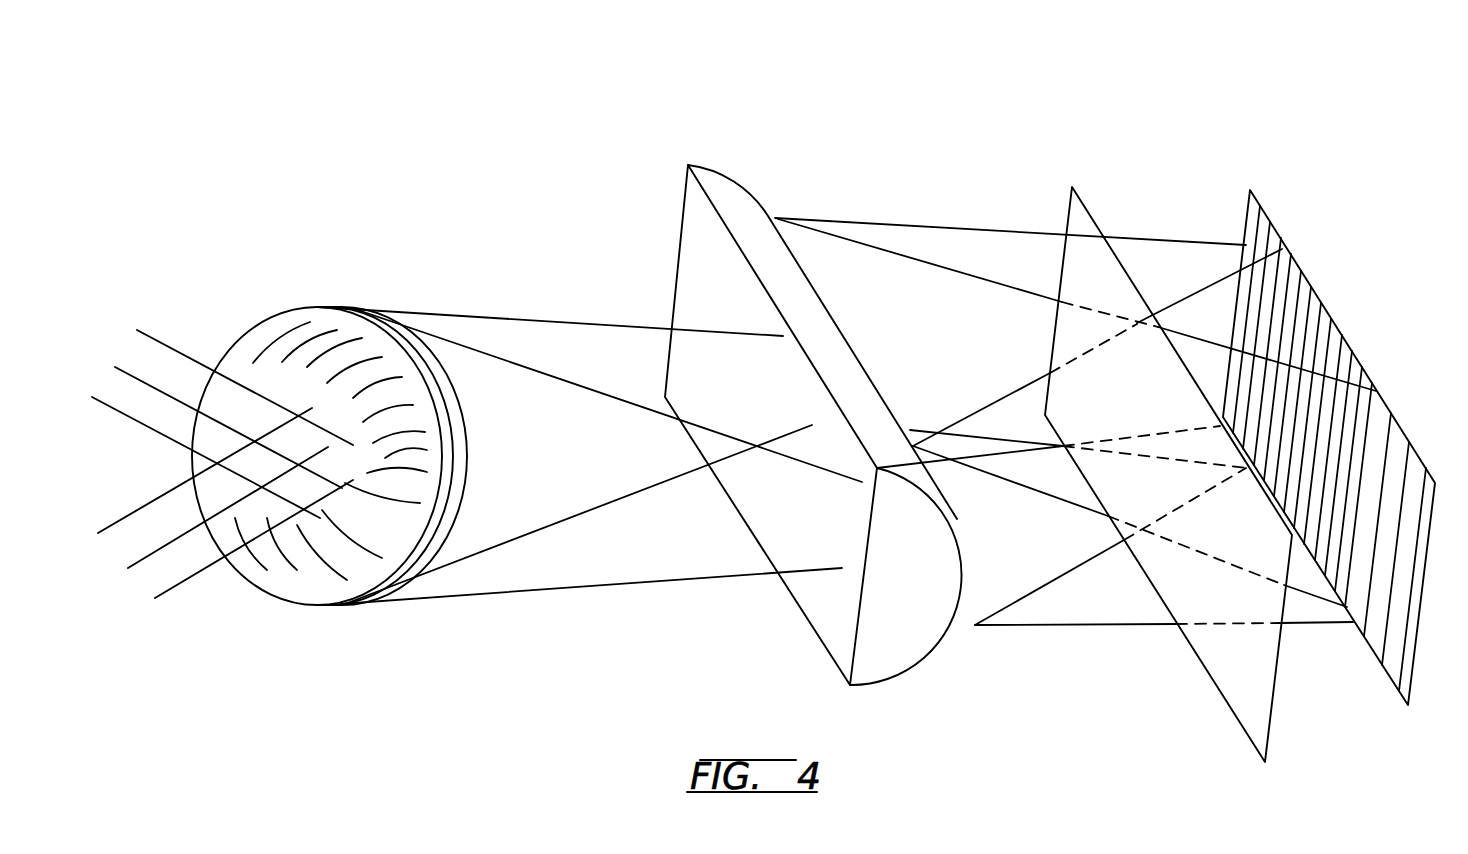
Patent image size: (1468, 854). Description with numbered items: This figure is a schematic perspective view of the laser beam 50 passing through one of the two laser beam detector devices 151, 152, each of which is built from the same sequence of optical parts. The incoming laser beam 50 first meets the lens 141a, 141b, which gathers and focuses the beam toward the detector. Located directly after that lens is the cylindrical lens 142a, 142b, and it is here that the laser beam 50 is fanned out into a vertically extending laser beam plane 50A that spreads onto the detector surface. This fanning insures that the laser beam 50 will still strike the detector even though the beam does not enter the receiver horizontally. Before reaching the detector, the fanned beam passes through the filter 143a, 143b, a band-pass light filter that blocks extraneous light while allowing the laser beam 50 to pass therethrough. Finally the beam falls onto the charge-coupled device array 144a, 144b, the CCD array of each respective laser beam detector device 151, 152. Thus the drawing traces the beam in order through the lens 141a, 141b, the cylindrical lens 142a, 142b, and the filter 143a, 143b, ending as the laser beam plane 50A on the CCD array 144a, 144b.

The laser beam 50 is at (160, 342).
The laser beam plane 50A is at (1194, 240).
The lens 141a is at (329, 482).
The lens 141b is at (328, 608).
The cylindrical lens 142a is at (813, 396).
The cylindrical lens 142b is at (805, 125).
The filter 143a is at (1168, 474).
The filter 143b is at (1232, 722).
The CCD array 144a is at (1329, 430).
The CCD array 144b is at (1257, 197).
The laser beam detector device 151 is at (590, 329).
The laser beam detector device 152 is at (483, 152).